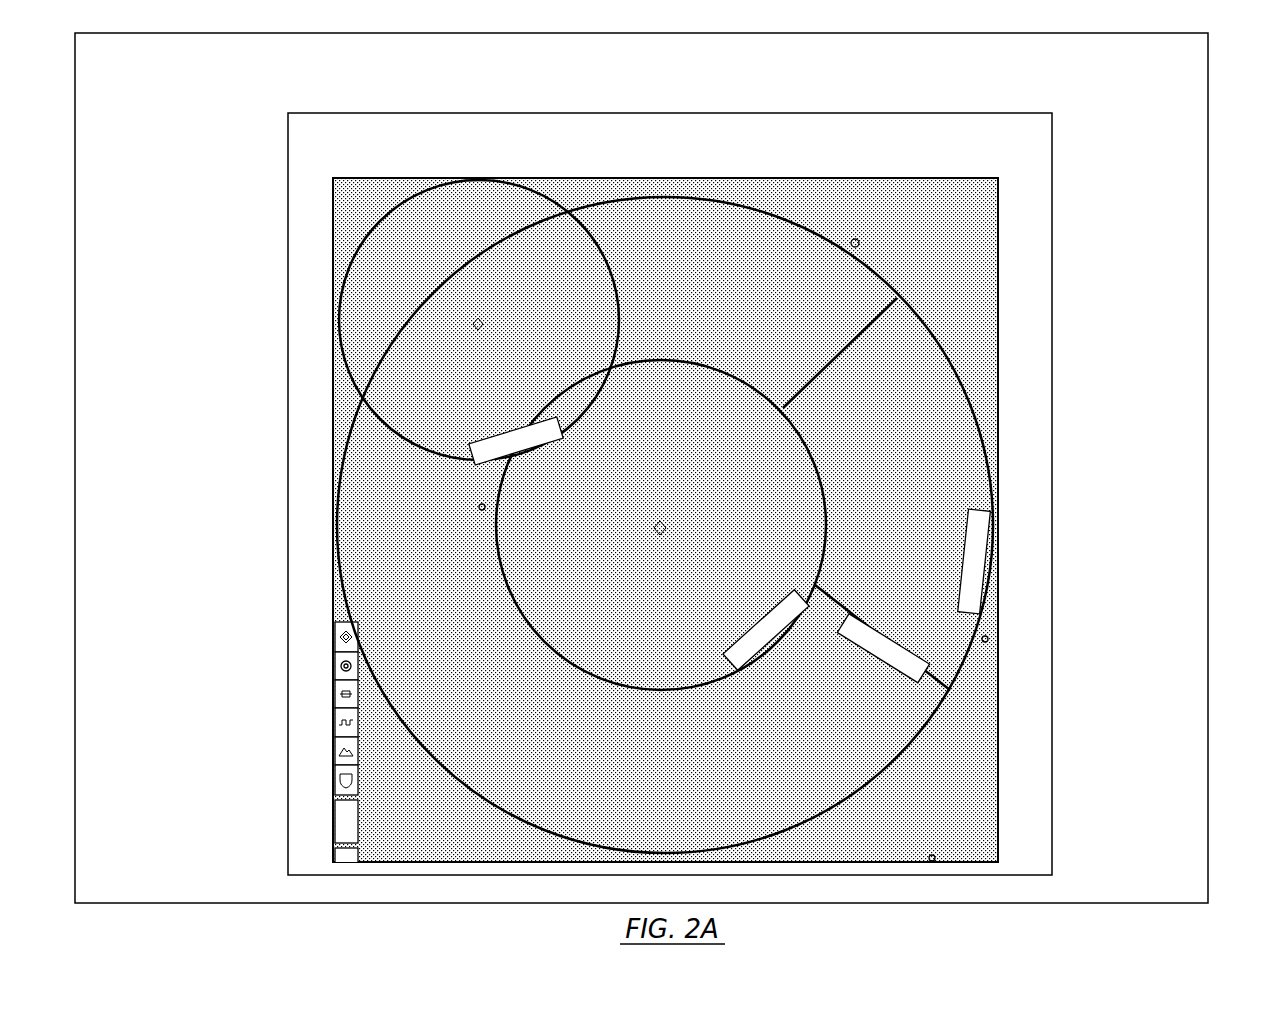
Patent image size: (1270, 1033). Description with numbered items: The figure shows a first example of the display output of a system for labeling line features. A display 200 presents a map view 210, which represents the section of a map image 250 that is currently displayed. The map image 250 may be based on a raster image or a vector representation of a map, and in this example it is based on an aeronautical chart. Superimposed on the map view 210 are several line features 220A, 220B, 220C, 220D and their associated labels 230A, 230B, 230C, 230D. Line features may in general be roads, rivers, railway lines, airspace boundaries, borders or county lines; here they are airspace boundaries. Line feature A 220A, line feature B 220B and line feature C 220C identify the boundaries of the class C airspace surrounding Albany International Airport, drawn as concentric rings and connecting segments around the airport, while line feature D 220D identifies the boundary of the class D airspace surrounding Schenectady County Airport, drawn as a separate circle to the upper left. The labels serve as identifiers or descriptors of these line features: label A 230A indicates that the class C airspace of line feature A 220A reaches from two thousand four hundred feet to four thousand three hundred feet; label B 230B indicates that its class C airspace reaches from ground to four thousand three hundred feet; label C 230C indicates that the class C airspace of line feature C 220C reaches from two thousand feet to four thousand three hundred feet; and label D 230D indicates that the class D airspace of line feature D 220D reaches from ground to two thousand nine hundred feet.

The display 200 is at (654, 72).
The map view 210 is at (654, 147).
The map image 250 is at (977, 248).
The line feature A 220A is at (975, 417).
The line feature B 220B is at (818, 580).
The line feature C 220C is at (882, 772).
The line feature D 220D is at (340, 305).
The label A 230A is at (990, 523).
The label B 230B is at (795, 643).
The label C 230C is at (925, 667).
The label D 230D is at (472, 461).